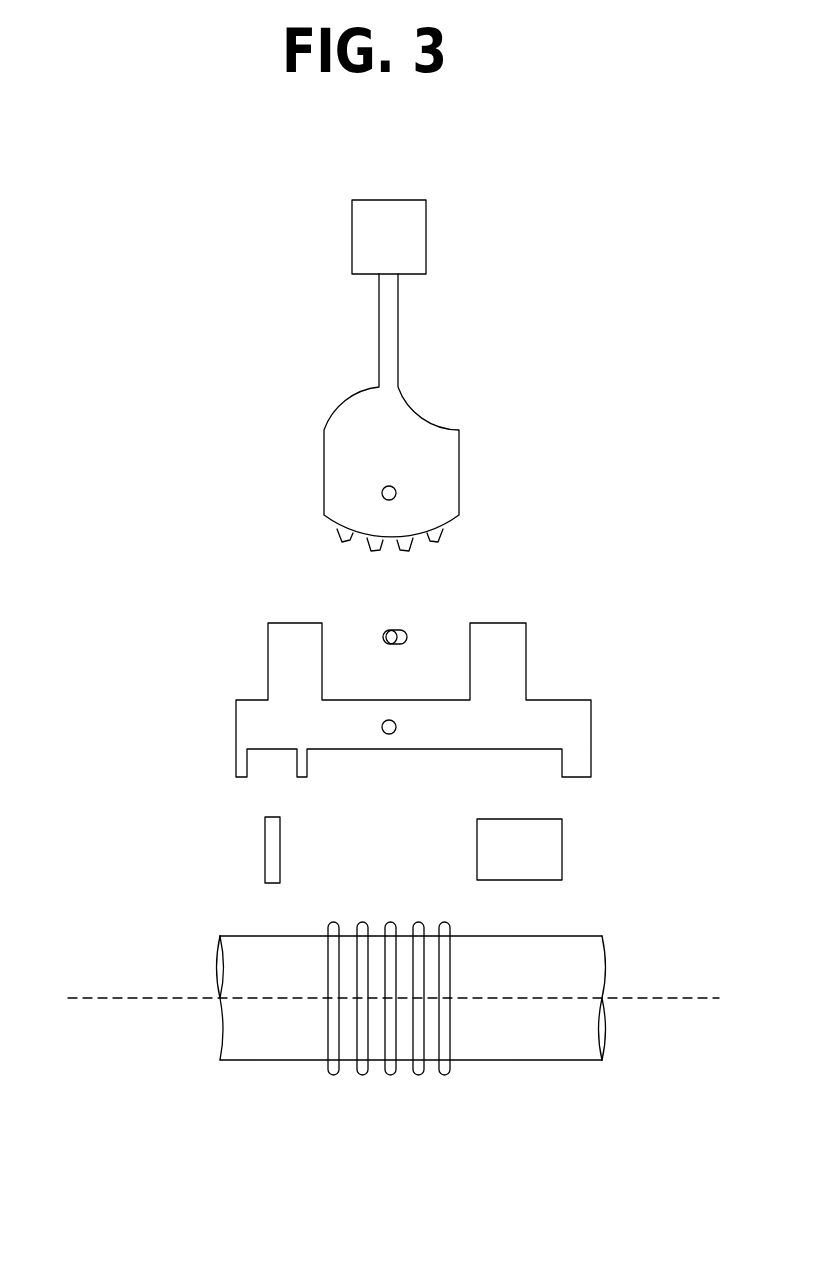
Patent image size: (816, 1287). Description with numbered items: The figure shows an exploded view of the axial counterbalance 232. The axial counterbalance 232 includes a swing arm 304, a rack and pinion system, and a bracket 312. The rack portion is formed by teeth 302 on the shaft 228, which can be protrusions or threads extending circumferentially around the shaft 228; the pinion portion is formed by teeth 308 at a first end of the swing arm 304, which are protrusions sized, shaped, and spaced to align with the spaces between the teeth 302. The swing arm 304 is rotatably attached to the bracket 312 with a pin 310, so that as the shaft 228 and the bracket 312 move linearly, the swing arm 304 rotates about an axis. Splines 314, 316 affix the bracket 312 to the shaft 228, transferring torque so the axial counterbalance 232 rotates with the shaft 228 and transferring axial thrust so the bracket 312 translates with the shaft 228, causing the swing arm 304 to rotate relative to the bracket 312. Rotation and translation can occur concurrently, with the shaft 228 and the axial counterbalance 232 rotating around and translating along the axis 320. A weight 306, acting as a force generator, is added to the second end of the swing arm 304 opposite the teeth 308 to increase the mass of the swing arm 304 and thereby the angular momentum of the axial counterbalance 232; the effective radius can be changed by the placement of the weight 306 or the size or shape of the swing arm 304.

The axial counterbalance 232 is at (658, 328).
The weight 306 is at (352, 232).
The swing arm 304 is at (324, 469).
The teeth 308 is at (465, 550).
The pin 310 is at (382, 635).
The bracket 312 is at (236, 725).
The spline 314 is at (265, 862).
The spline 316 is at (562, 858).
The shaft 228 is at (572, 1060).
The axis 320 is at (683, 998).
The teeth 302 is at (416, 1075).